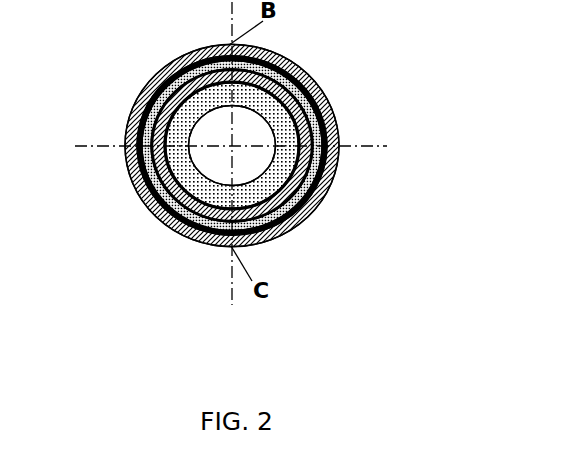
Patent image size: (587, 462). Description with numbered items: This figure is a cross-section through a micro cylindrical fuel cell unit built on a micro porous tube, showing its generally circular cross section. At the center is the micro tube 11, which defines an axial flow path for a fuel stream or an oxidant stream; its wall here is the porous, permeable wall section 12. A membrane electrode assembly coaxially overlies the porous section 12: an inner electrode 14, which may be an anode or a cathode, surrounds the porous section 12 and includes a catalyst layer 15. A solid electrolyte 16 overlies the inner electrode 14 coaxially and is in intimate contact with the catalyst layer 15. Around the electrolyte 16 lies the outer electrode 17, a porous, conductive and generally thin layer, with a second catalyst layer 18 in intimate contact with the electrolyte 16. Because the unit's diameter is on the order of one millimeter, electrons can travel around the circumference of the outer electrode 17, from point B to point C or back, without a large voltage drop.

The micro tube 11 is at (250, 135).
The porous wall section 12 is at (273, 113).
The inner electrode 14 is at (168, 78).
The catalyst layer 15 is at (136, 102).
The solid electrolyte 16 is at (137, 158).
The outer electrode 17 is at (165, 222).
The second catalyst layer 18 is at (137, 186).